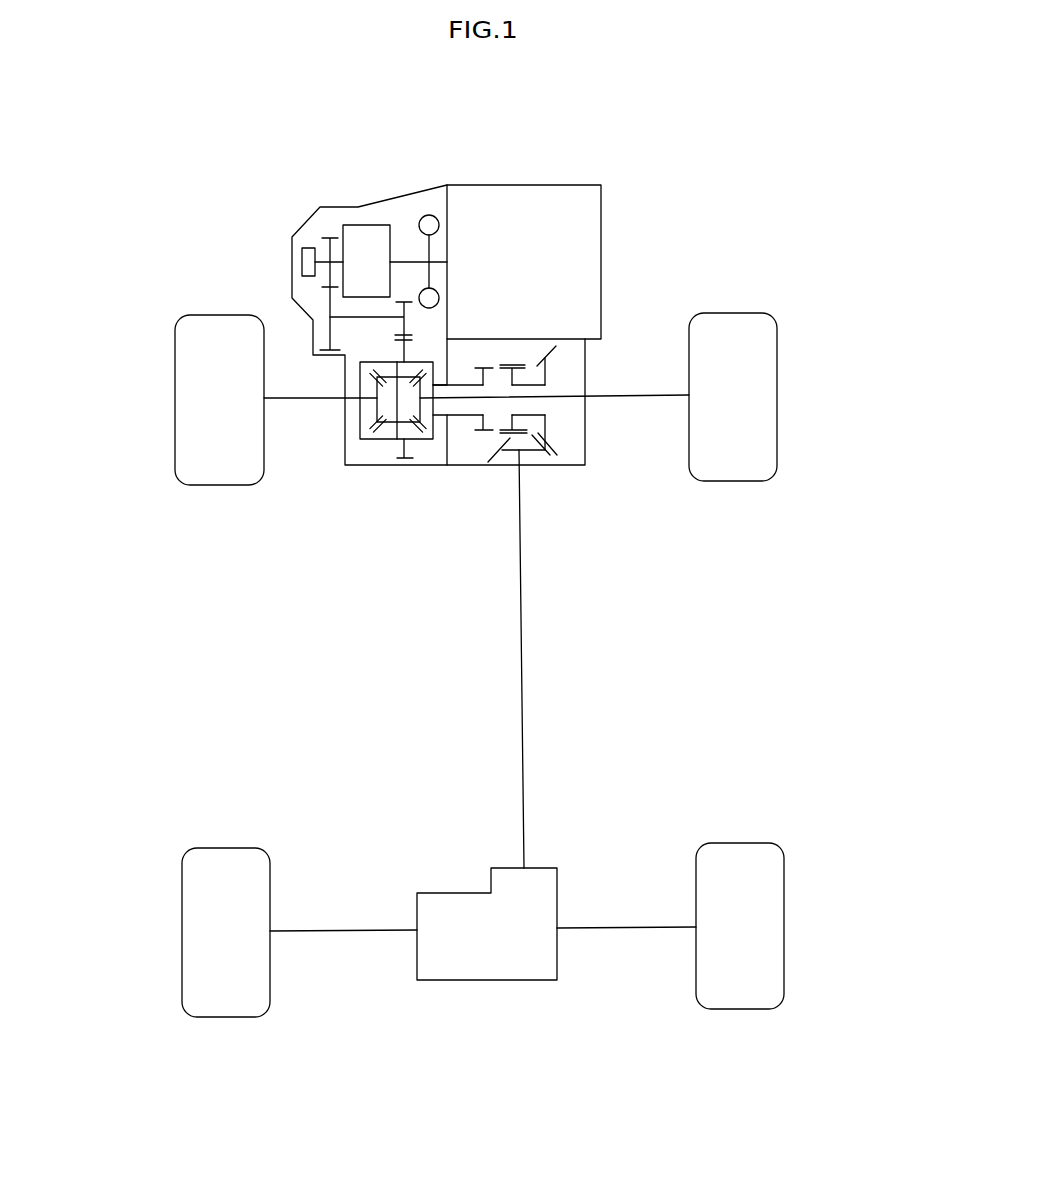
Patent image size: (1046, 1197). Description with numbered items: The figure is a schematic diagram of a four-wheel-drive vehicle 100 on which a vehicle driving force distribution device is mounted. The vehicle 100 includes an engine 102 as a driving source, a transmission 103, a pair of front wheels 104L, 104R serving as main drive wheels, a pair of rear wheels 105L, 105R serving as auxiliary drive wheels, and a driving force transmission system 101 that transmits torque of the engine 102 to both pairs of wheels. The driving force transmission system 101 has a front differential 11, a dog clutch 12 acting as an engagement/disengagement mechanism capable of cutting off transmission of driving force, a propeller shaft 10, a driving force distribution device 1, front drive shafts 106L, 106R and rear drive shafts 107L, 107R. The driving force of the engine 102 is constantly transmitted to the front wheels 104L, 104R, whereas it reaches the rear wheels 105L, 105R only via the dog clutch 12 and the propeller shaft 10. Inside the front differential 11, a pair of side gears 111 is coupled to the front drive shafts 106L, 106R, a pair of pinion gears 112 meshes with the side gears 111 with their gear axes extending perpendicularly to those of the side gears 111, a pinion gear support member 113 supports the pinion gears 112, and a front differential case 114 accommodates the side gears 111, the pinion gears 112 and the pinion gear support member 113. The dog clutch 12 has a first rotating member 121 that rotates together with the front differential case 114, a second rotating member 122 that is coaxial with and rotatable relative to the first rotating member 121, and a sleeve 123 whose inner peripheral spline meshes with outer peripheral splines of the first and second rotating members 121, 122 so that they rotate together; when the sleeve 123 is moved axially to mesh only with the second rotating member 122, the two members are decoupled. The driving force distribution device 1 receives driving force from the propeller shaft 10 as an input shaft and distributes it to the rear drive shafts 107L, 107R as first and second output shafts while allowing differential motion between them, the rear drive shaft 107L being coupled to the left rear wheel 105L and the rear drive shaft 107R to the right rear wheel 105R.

The four-wheel-drive vehicle 100 is at (683, 158).
The driving force transmission system 101 is at (645, 293).
The engine 102 is at (498, 185).
The transmission 103 is at (344, 207).
The front wheel 104L is at (176, 400).
The front wheel 104R is at (777, 388).
The rear wheel 105L is at (182, 933).
The rear wheel 105R is at (784, 928).
The front drive shaft 106L is at (320, 398).
The front drive shaft 106R is at (642, 393).
The rear drive shaft 107L is at (368, 932).
The rear drive shaft 107R is at (605, 931).
The front differential 11 is at (380, 397).
The side gears 111 is at (393, 400).
The pinion gears 112 is at (405, 375).
The pinion gear support member 113 is at (383, 411).
The front differential case 114 is at (370, 438).
The dog clutch 12 is at (535, 406).
The first rotating member 121 is at (491, 366).
The second rotating member 122 is at (540, 397).
The sleeve 123 is at (518, 367).
The propeller shaft 10 is at (523, 652).
The driving force distribution device 1 is at (457, 892).